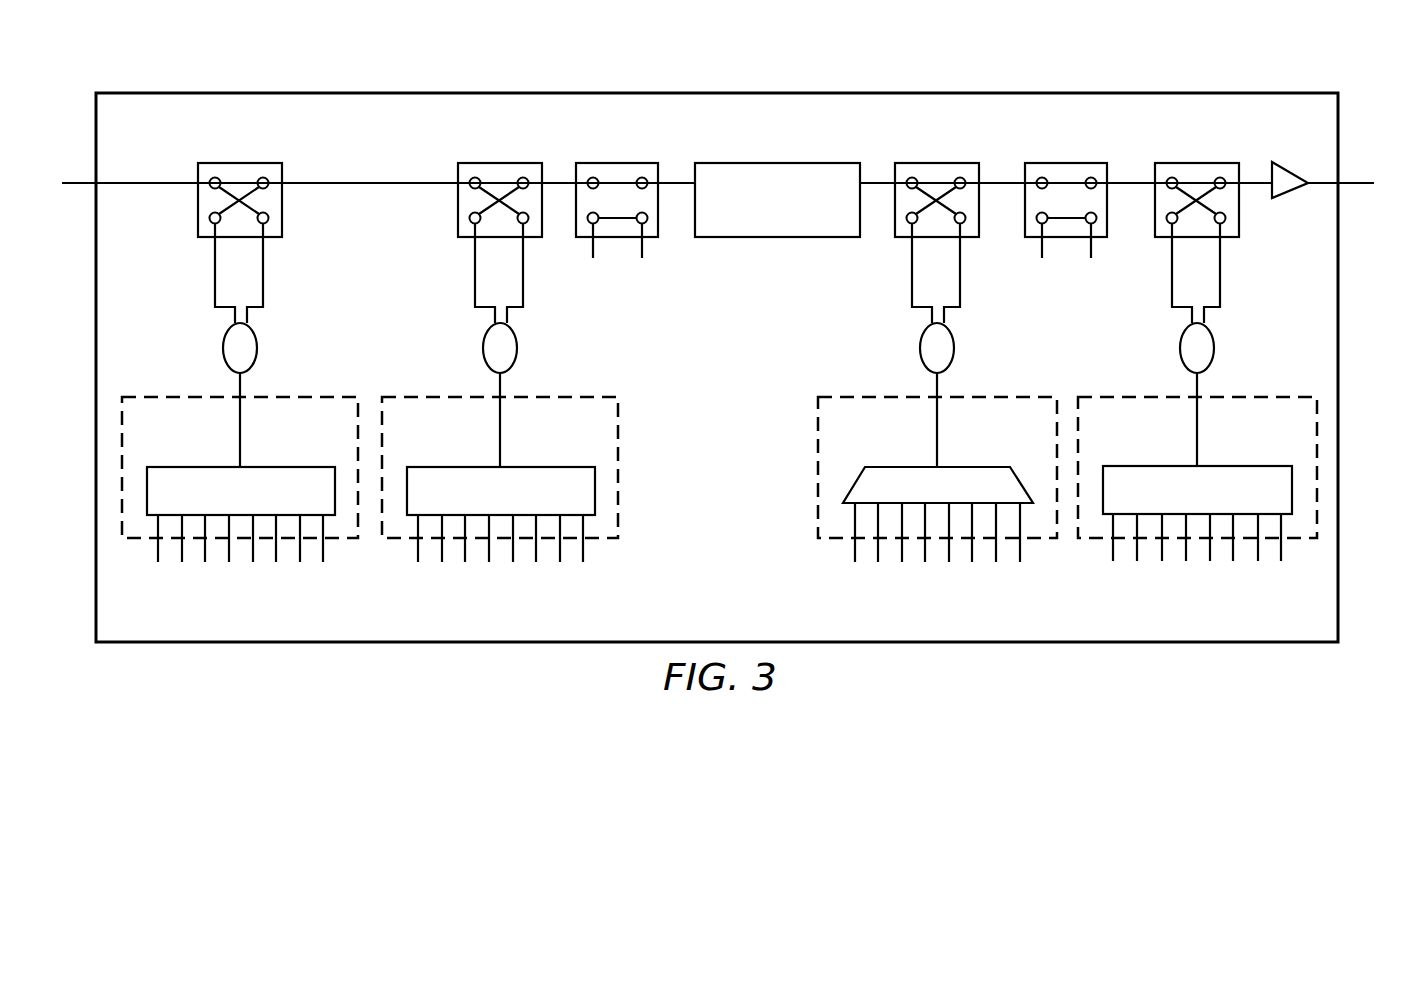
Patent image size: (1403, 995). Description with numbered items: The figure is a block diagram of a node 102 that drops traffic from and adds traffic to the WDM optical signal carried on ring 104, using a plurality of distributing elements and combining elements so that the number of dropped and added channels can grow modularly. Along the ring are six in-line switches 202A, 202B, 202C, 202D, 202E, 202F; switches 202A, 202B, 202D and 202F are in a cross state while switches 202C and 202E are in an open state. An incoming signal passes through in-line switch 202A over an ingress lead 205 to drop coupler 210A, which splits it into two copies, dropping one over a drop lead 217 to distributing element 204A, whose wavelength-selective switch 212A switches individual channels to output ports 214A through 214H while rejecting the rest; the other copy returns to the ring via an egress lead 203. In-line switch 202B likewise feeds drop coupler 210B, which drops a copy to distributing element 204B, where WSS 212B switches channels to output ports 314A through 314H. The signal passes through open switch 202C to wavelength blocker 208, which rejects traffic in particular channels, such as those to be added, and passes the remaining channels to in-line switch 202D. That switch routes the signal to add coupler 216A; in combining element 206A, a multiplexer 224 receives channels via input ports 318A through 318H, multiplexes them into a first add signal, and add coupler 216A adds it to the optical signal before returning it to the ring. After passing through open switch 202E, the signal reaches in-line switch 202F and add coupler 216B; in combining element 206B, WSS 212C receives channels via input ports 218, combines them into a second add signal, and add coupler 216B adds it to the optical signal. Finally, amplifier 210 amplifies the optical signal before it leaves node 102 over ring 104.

The node 102 is at (684, 86).
The ring 104 is at (1362, 178).
The in-line switch 202A is at (245, 163).
The in-line switch 202B is at (498, 163).
The in-line switch 202C is at (617, 163).
The in-line switch 202D is at (935, 163).
The in-line switch 202E is at (1055, 163).
The in-line switch 202F is at (1196, 163).
The egress lead 203 is at (215, 283).
The ingress lead 205 is at (263, 283).
The wavelength blocker 208 is at (777, 163).
The amplifier 210 is at (1290, 166).
The drop coupler 210A is at (222, 352).
The drop coupler 210B is at (482, 352).
The distributing element 204A is at (307, 388).
The distributing element 204B is at (567, 388).
The combining element 206A is at (1007, 388).
The combining element 206B is at (1267, 388).
The wavelength-selective switch 212A is at (292, 467).
The wavelength-selective switch 212B is at (552, 467).
The wavelength-selective switch 212C is at (1142, 466).
The output port 214A is at (158, 564).
The output port 214H is at (323, 564).
The add coupler 216A is at (920, 352).
The add coupler 216B is at (1179, 352).
The drop lead 217 is at (240, 432).
The input port 218 is at (1113, 563).
The multiplexer 224 is at (890, 467).
The output port 314A is at (418, 564).
The output port 314H is at (583, 564).
The input port 318A is at (855, 564).
The input port 318H is at (1020, 564).